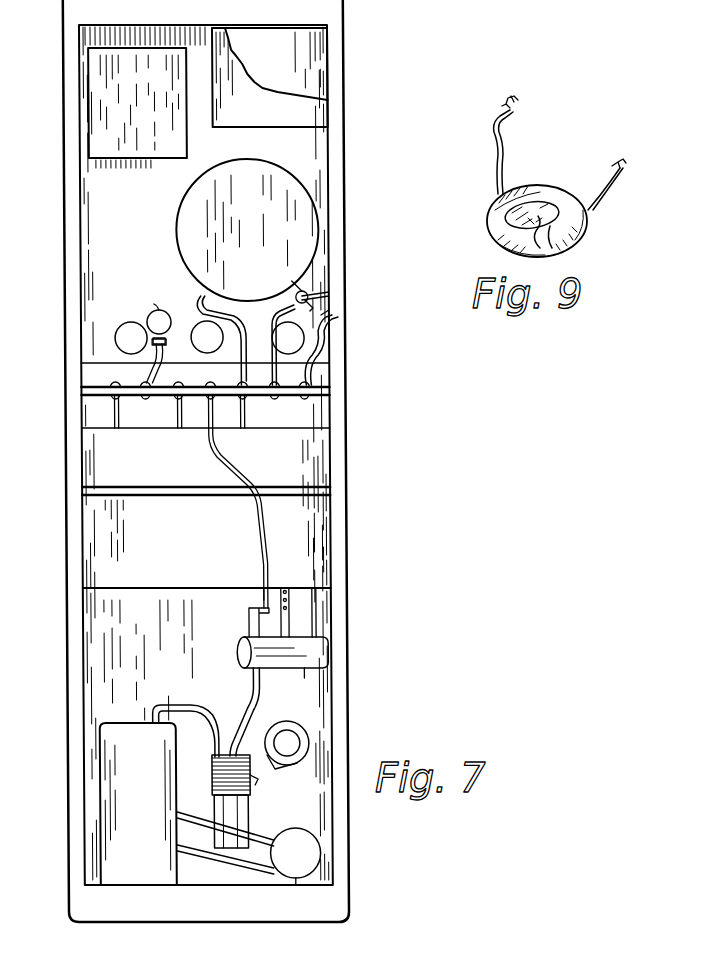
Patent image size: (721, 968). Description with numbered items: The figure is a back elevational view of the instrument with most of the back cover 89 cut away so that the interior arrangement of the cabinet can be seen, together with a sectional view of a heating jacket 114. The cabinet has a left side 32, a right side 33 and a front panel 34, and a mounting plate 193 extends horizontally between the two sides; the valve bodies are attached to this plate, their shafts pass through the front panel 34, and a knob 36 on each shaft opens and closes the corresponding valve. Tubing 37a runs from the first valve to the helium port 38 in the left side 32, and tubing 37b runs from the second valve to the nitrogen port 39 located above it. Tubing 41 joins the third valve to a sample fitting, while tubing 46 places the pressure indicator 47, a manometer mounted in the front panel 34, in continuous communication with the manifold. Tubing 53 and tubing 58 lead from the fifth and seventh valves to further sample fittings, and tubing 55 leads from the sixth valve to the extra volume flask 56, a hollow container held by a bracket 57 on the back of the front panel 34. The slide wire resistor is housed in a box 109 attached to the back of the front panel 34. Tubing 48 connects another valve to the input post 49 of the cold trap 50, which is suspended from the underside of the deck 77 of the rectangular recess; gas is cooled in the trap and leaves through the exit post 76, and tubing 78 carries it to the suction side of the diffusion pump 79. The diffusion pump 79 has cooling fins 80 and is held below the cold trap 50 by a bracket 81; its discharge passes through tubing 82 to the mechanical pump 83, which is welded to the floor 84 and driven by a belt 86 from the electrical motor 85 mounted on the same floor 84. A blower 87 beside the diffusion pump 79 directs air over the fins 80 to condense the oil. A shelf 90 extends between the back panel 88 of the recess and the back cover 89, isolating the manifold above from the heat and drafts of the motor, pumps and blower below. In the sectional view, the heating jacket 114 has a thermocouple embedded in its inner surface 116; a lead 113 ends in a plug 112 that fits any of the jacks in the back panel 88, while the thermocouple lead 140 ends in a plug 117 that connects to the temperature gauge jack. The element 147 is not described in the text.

In FIG. 7, the right side 33 is at (63, 354).
In FIG. 7, the back cover 89 is at (310, 46).
In FIG. 7, the box 109 is at (320, 108).
In FIG. 7, the pressure indicator 47 is at (262, 170).
In FIG. 7, the tubing 46 is at (217, 300).
In FIG. 7, the tubing 37b is at (288, 279).
In FIG. 7, the bracket 57 is at (167, 348).
In FIG. 7, the extra volume flask 56 is at (157, 308).
In FIG. 7, the tubing 55 is at (150, 348).
In FIG. 7, the knob 36 is at (205, 342).
In FIG. 7, the tubing 37a is at (332, 351).
In FIG. 7, the nitrogen port 39 is at (330, 294).
In FIG. 7, the helium port 38 is at (330, 302).
In FIG. 7, the left side 32 is at (330, 328).
In FIG. 7, the mounting plate 193 is at (286, 395).
In FIG. 7, the front panel 34 is at (318, 417).
In FIG. 7, the tubing 58 is at (116, 425).
In FIG. 7, the tubing 53 is at (180, 423).
In FIG. 7, the tubing 48 is at (210, 423).
In FIG. 7, the tubing 41 is at (246, 423).
In FIG. 7, the shelf 90 is at (122, 498).
In FIG. 7, the back panel 88 is at (320, 524).
In FIG. 7, the deck 77 is at (162, 592).
In FIG. 7, the support post 147 is at (280, 594).
In FIG. 7, the input post 49 is at (252, 610).
In FIG. 7, the exit post 76 is at (254, 678).
In FIG. 7, the cold trap 50 is at (276, 672).
In FIG. 7, the tubing 78 is at (244, 694).
In FIG. 7, the tubing 82 is at (188, 688).
In FIG. 7, the cooling fins 80 is at (204, 752).
In FIG. 7, the bracket 81 is at (250, 776).
In FIG. 7, the diffusion pump 79 is at (244, 804).
In FIG. 7, the mechanical pump 83 is at (132, 723).
In FIG. 7, the floor 84 is at (210, 886).
In FIG. 7, the belt 86 is at (278, 830).
In FIG. 7, the electrical motor 85 is at (290, 878).
In FIG. 7, the blower 87 is at (284, 732).
In FIG. 9, the heating jacket 114 is at (586, 224).
In FIG. 9, the inner surface 116 is at (536, 194).
In FIG. 9, the lead 113 is at (504, 146).
In FIG. 9, the plug 112 is at (516, 108).
In FIG. 9, the lead 140 is at (600, 182).
In FIG. 9, the plug 117 is at (622, 166).